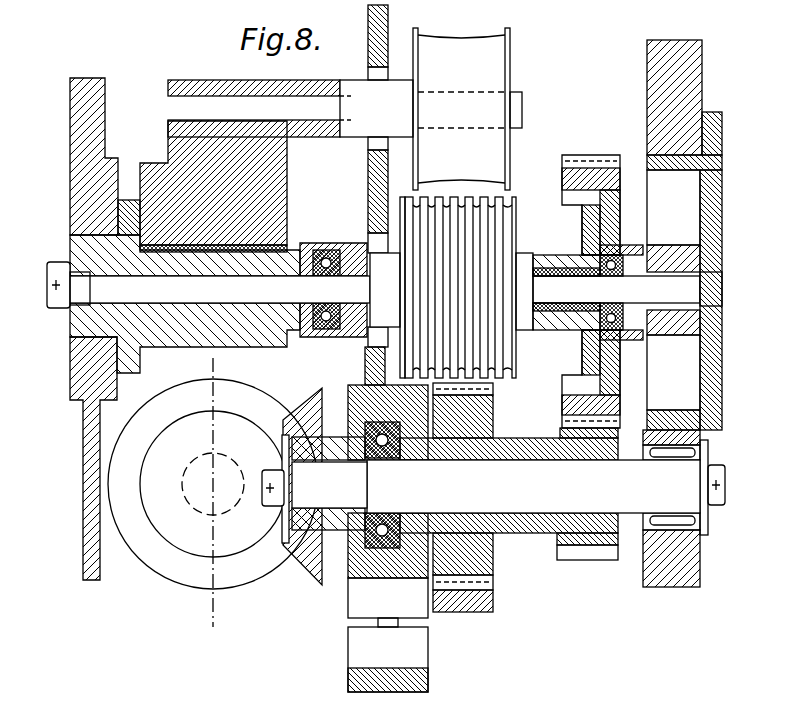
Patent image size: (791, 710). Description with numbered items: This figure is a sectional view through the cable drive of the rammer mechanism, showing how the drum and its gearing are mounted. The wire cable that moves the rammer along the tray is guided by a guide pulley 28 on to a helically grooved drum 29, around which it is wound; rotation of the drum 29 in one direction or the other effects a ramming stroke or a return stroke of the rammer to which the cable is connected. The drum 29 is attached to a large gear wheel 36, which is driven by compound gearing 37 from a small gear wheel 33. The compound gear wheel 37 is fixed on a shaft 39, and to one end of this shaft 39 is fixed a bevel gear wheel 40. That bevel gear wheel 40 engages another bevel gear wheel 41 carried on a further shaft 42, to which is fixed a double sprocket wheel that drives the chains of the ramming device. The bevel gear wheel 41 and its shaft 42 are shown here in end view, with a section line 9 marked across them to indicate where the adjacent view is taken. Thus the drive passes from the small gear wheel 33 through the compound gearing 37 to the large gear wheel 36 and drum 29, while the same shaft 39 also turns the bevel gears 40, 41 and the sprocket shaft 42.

The section line 9- 9 is at (204, 367).
The guide pulley 28 is at (448, 52).
The helically grooved drum 29 is at (507, 217).
The small gear wheel 33 is at (492, 604).
The large gear wheel 36 is at (597, 173).
The compound gear wheel 37 is at (562, 428).
The shaft 39 is at (542, 498).
The bevel gear wheel 40 is at (320, 555).
The bevel gear wheel 41 is at (172, 582).
The shaft 42 is at (213, 453).